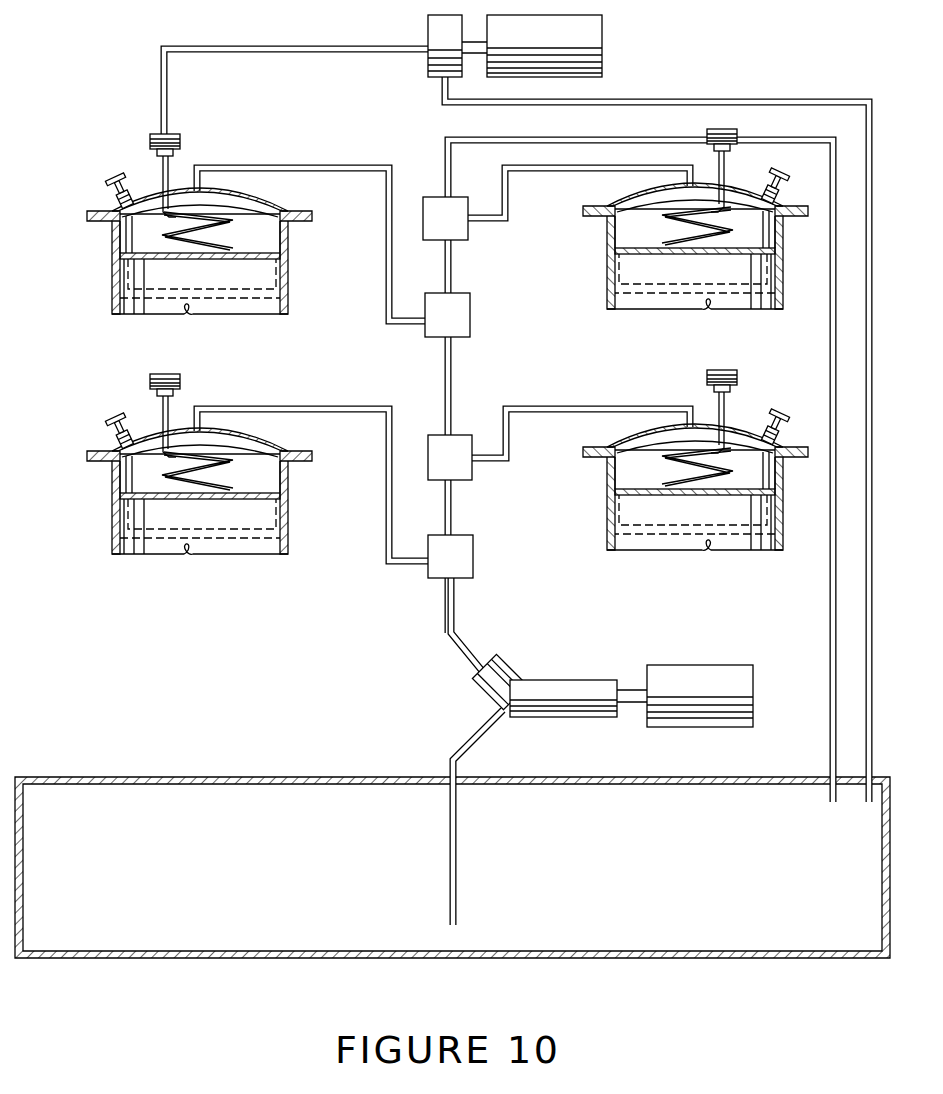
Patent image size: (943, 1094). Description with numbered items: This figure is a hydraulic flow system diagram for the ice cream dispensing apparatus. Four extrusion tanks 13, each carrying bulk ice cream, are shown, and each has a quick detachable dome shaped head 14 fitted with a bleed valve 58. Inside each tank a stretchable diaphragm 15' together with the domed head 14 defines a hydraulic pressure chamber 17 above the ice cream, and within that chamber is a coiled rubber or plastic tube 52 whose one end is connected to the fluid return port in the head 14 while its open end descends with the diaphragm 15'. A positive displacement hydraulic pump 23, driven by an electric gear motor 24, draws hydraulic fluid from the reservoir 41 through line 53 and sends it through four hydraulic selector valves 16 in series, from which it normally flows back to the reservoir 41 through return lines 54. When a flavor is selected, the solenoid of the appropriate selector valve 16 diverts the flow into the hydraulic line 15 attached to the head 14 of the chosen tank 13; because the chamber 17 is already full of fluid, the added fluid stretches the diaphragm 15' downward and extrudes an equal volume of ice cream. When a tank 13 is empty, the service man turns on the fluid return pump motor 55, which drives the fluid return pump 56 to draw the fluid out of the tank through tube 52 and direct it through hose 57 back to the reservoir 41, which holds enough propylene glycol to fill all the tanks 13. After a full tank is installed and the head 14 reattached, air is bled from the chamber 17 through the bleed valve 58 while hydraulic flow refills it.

The extrusion tank 13 is at (288, 288).
The dome shaped head 14 is at (242, 195).
The hydraulic line 15 is at (443, 364).
The diaphragm 15' is at (447, 401).
The hydraulic selector valve 16 is at (466, 232).
The hydraulic pressure chamber 17 is at (255, 235).
The hydraulic pump 23 is at (500, 668).
The electric gear motor 24 is at (672, 665).
The reservoir 41 is at (272, 777).
The coiled tube 52 is at (172, 168).
The line 53 is at (447, 612).
The return line 54 is at (645, 138).
The fluid return pump motor 55 is at (602, 45).
The fluid return pump 56 is at (428, 22).
The hose 57 is at (768, 98).
The bleed valve 58 is at (110, 186).